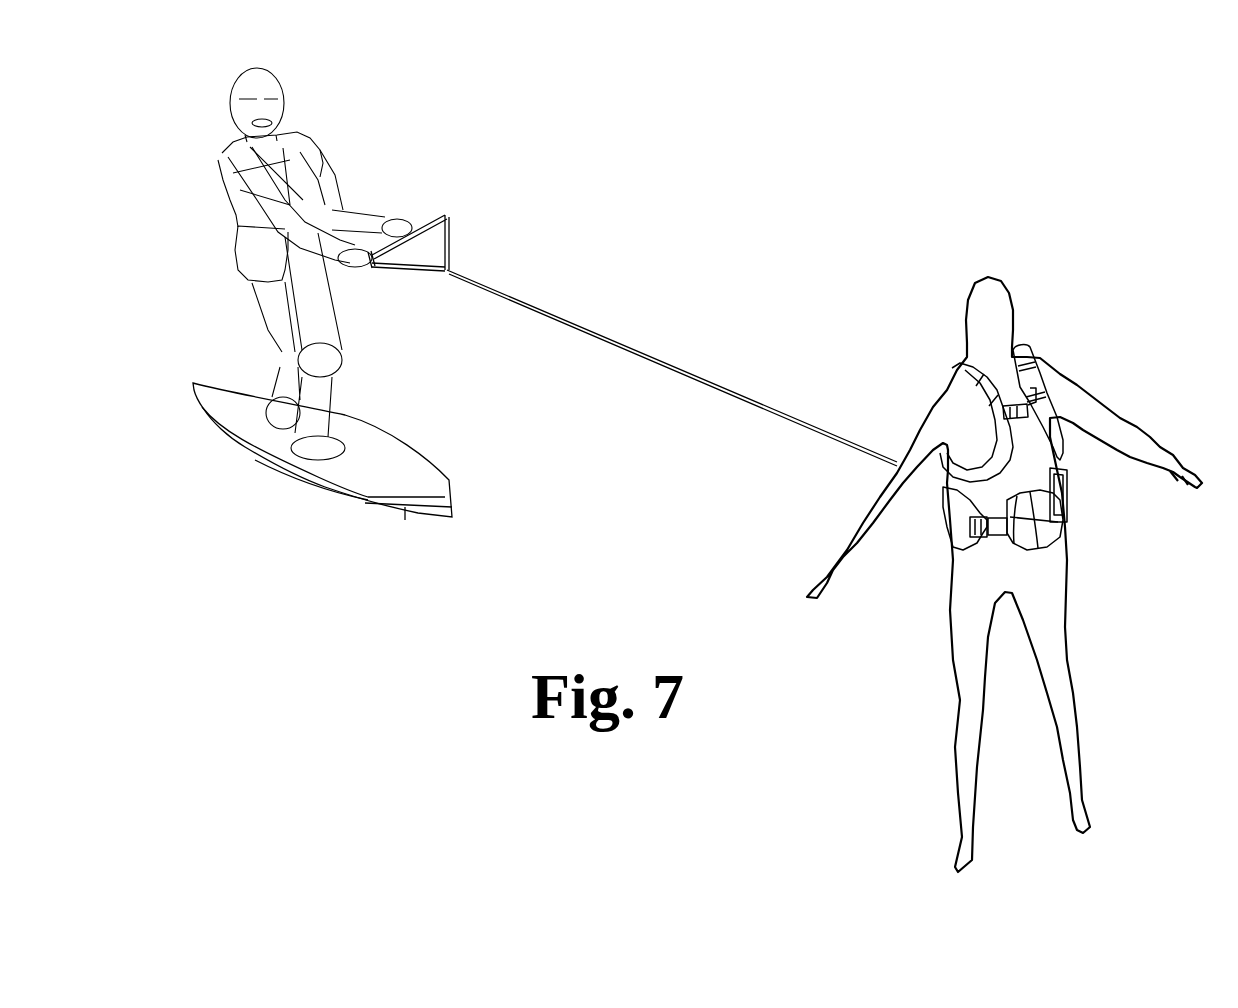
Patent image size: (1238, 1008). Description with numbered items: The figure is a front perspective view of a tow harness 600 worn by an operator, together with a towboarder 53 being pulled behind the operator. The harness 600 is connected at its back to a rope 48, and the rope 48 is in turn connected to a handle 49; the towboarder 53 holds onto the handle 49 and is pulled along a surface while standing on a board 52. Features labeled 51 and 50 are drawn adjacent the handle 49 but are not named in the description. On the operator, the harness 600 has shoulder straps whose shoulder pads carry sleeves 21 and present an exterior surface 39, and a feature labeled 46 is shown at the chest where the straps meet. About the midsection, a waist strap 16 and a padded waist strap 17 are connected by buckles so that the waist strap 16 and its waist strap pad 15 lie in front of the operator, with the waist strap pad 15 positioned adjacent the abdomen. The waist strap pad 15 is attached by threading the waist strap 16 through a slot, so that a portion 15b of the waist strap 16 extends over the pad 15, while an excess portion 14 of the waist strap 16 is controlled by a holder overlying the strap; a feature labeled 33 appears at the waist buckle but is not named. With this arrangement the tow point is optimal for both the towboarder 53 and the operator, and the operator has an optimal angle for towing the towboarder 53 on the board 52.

The towboarder 53 is at (222, 172).
The board 52 is at (372, 503).
The handle frame 51 is at (445, 215).
The handle 49 is at (373, 268).
The handle grip 50 is at (378, 270).
The rope 48 is at (497, 290).
The harness 600 is at (651, 511).
The excess portion of the waist strap 14 is at (1033, 543).
The sleeves 21 is at (982, 407).
The exterior surface 39 is at (1030, 353).
The chest strap 46 is at (1020, 385).
The padded waist strap 17 is at (960, 527).
The buckle 33 is at (987, 523).
The waist strap pad 15 is at (1053, 530).
The waist strap 16 is at (1057, 503).
The portion of the waist strap 15b is at (1030, 505).